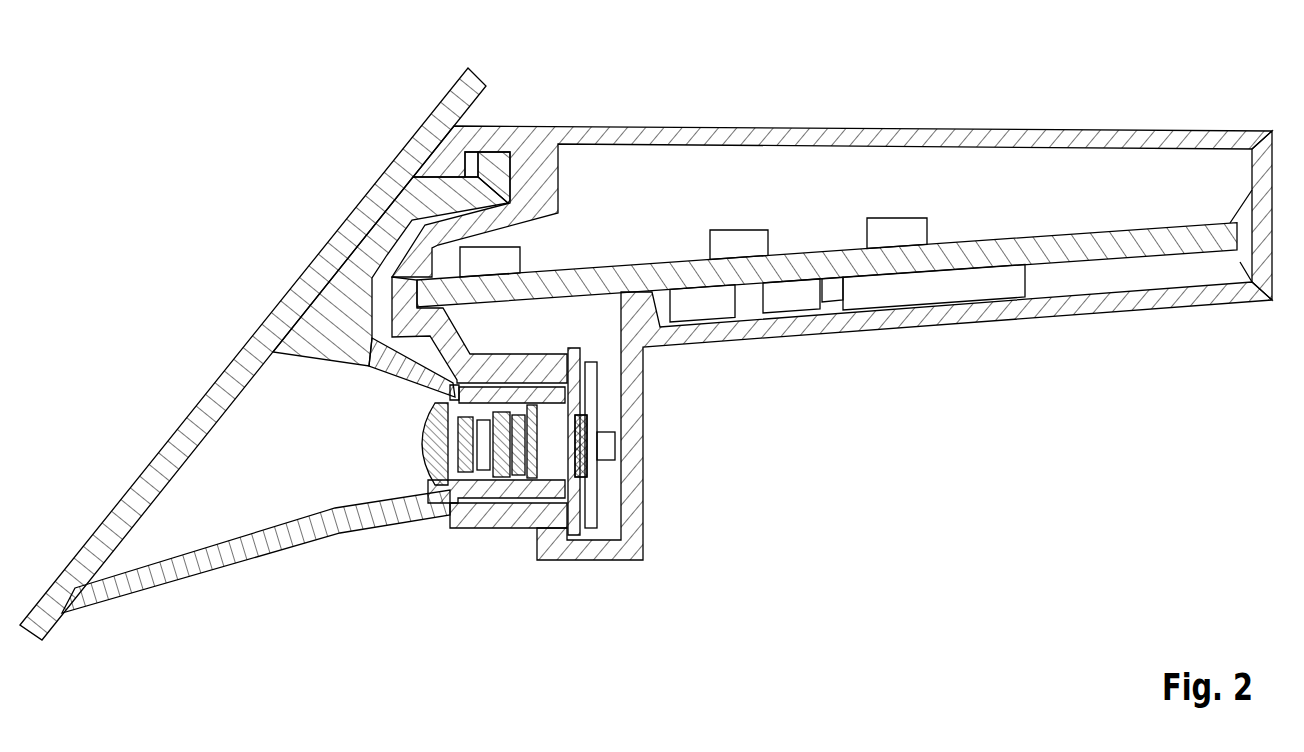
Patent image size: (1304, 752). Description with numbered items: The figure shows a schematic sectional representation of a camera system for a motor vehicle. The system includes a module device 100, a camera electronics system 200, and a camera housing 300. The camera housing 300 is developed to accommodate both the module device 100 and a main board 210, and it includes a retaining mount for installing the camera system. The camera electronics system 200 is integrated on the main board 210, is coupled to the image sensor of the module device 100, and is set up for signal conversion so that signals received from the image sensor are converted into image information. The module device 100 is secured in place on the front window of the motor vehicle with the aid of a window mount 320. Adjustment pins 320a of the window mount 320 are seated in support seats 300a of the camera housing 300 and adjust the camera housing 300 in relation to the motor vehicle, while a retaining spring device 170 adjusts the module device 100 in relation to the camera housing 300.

The module device 100 is at (406, 452).
The retaining spring device 170 is at (587, 402).
The camera electronics system 200 is at (742, 242).
The main board 210 is at (983, 243).
The camera housing 300 is at (490, 515).
The support seats 300a is at (517, 140).
The window mount 320 is at (320, 350).
The adjustment pins 320a is at (490, 160).